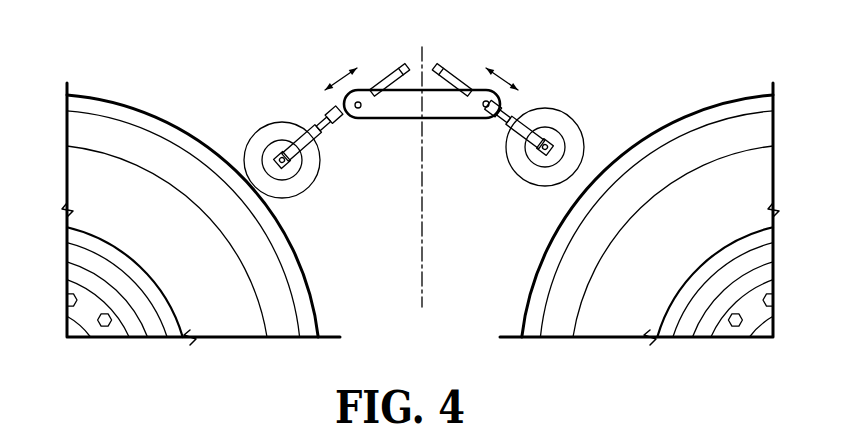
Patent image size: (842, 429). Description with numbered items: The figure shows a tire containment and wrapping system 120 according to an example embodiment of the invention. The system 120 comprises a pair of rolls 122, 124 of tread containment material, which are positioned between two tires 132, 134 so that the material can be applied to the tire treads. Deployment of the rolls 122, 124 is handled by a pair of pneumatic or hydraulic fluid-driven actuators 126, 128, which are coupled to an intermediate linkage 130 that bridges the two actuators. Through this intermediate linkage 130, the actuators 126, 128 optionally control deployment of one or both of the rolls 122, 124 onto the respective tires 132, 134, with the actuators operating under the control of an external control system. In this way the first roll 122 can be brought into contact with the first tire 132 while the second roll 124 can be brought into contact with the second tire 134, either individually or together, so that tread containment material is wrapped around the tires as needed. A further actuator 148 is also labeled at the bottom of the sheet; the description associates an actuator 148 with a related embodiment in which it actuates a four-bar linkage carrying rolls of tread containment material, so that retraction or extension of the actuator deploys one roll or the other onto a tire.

The system 120 is at (190, 65).
The roll 122 is at (305, 177).
The roll 124 is at (538, 173).
The actuator 126 is at (393, 78).
The actuator 128 is at (452, 88).
The intermediate linkage 130 is at (402, 107).
The tire 132 is at (287, 305).
The tire 134 is at (538, 285).
The actuator 148 is at (539, 417).